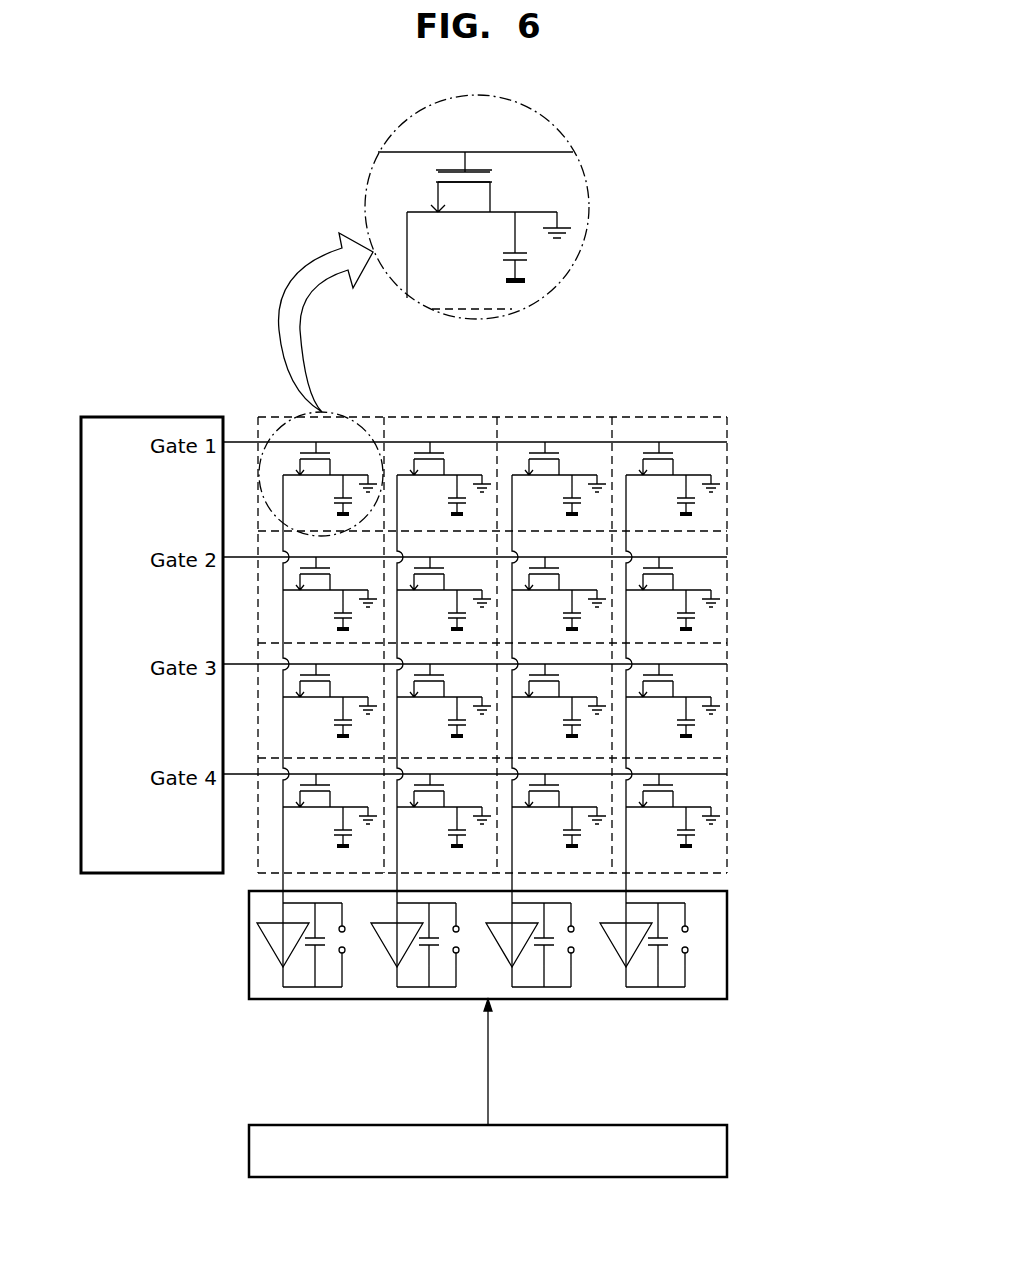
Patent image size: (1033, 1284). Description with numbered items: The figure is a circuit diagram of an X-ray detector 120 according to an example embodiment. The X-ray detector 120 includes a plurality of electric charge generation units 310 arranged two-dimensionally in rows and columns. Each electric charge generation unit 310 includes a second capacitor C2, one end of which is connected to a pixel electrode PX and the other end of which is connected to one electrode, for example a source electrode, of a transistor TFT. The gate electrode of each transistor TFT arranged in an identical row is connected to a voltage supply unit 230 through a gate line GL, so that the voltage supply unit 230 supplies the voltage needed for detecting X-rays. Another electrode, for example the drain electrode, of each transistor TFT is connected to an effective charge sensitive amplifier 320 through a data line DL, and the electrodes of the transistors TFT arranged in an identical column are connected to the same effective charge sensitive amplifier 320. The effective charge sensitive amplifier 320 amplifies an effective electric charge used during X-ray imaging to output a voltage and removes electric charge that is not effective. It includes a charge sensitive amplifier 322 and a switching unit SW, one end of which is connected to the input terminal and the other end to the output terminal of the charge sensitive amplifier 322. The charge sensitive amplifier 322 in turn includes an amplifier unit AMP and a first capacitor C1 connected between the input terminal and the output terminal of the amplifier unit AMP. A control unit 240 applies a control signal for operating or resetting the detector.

The X-ray detector 120 is at (503, 610).
The voltage supply unit 230 is at (118, 417).
The control unit 240 is at (693, 1125).
The electric charge generation unit 310 is at (268, 425).
The effective charge sensitive amplifier 320 is at (487, 1003).
The charge sensitive amplifier 322 is at (293, 991).
The gate line GL is at (698, 440).
The data line DL is at (283, 840).
The transistor TFT is at (500, 188).
The second capacitor C2 is at (540, 254).
The pixel electrode PX is at (526, 281).
The amplifier unit AMP is at (270, 952).
The first capacitor C1 is at (320, 950).
The switching unit SW is at (348, 947).